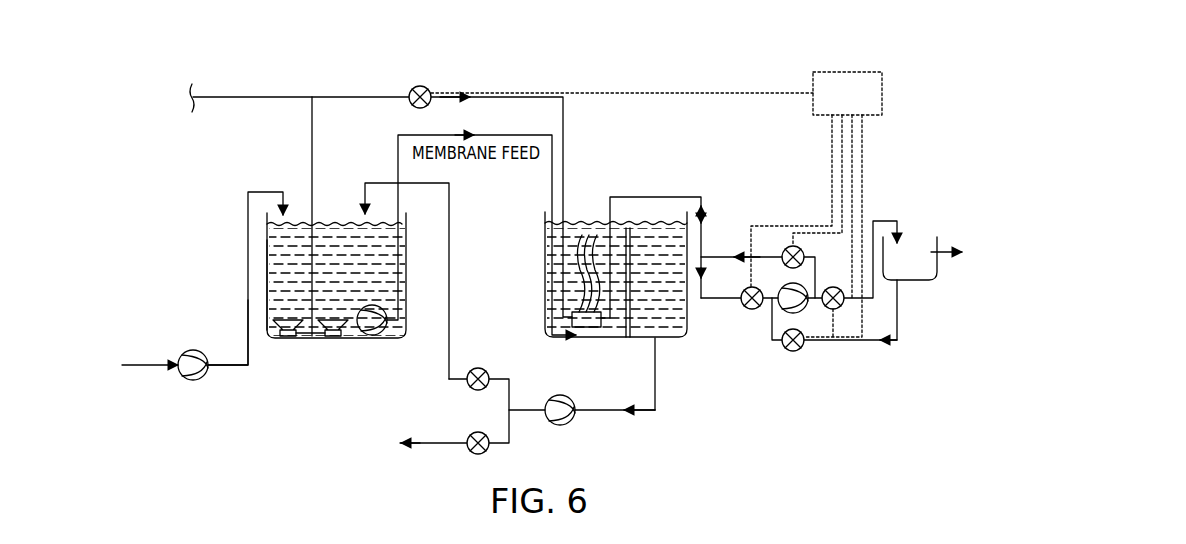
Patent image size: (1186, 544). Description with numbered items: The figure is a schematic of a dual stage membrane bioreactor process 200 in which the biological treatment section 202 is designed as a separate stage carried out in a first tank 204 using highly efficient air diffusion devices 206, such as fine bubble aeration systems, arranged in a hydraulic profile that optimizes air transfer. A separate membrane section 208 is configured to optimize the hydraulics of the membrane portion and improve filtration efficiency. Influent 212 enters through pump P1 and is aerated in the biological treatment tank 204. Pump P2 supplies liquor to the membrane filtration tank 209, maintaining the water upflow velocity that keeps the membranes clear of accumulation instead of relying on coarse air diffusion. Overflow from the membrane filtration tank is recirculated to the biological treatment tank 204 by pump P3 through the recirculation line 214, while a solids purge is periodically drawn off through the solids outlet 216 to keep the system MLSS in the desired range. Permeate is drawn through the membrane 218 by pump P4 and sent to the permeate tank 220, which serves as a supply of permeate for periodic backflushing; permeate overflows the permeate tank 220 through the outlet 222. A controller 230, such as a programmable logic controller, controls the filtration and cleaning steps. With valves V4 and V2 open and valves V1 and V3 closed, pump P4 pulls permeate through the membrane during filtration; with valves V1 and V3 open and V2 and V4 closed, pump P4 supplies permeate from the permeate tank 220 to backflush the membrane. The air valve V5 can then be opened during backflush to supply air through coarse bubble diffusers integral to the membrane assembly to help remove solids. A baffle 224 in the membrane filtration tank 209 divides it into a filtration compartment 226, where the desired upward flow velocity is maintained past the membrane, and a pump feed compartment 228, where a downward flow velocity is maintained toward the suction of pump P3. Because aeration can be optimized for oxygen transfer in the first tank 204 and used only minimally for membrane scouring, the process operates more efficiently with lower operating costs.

The dual stage membrane bioreactor process 200 is at (716, 48).
The biological treatment section 202 is at (331, 184).
The first tank 204 is at (266, 262).
The air diffusion devices 206 is at (288, 318).
The membrane section 208 is at (593, 182).
The membrane filtration tank 209 is at (683, 340).
The influent 212 is at (228, 367).
The recirculation line 214 is at (452, 216).
The solids outlet 216 is at (421, 440).
The membrane 218 is at (566, 305).
The permeate tank 220 is at (911, 283).
The outlet 222 is at (948, 256).
The baffle 224 is at (636, 236).
The filtration compartment 226 is at (619, 334).
The pump feed compartment 228 is at (668, 237).
The controller 230 is at (656, 204).
The pump P1 is at (193, 380).
The pump P2 is at (368, 305).
The pump P3 is at (582, 424).
The pump P4 is at (785, 310).
The valve V1 is at (793, 352).
The valve V2 is at (840, 309).
The valve V3 is at (793, 246).
The valve V4 is at (752, 311).
The air valve V5 is at (417, 86).